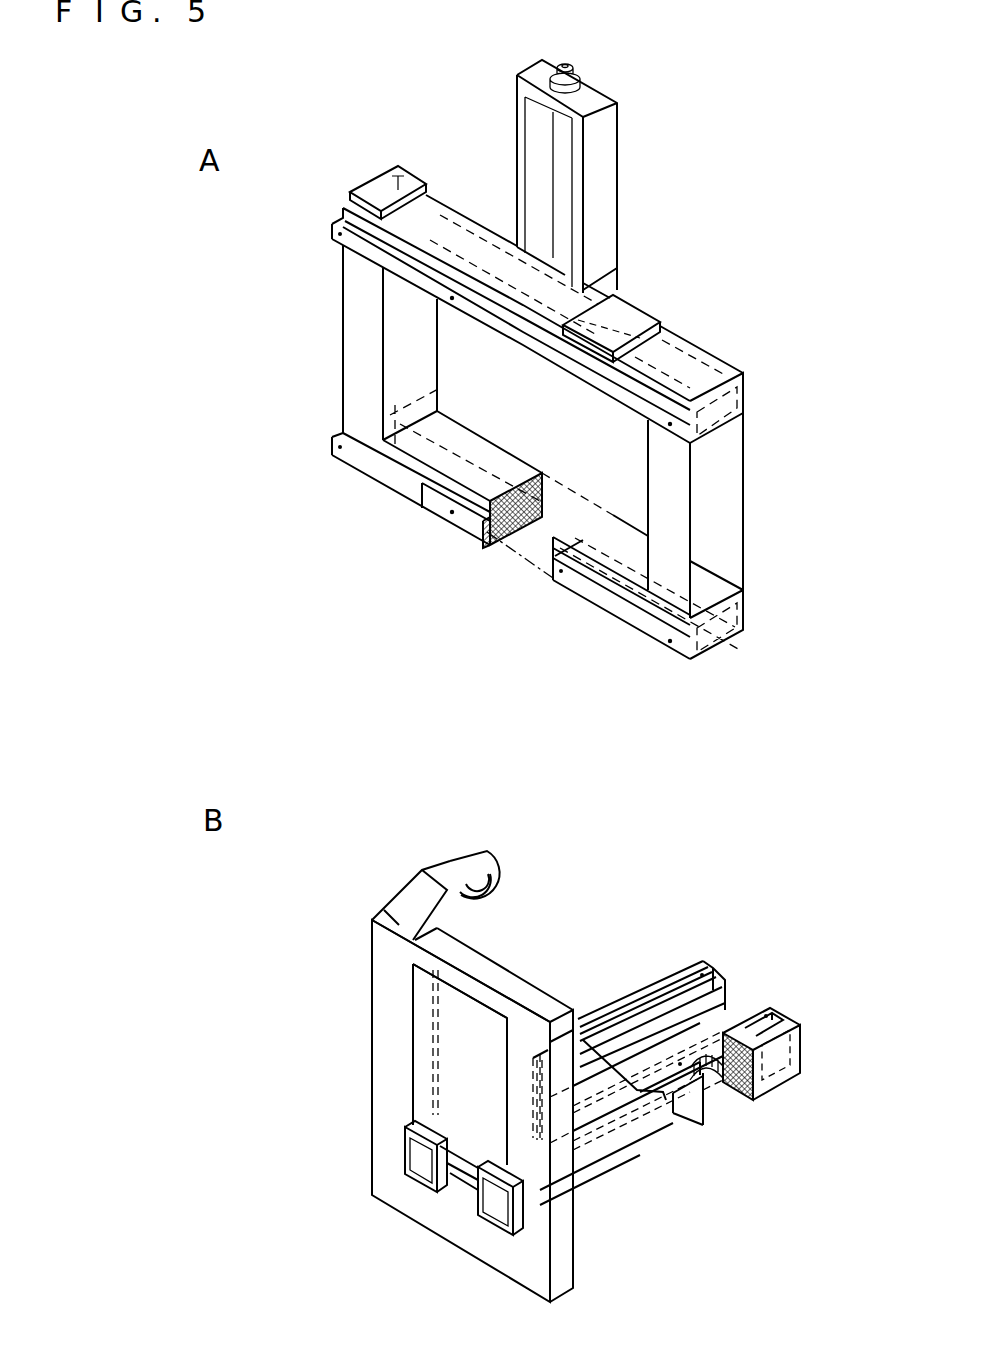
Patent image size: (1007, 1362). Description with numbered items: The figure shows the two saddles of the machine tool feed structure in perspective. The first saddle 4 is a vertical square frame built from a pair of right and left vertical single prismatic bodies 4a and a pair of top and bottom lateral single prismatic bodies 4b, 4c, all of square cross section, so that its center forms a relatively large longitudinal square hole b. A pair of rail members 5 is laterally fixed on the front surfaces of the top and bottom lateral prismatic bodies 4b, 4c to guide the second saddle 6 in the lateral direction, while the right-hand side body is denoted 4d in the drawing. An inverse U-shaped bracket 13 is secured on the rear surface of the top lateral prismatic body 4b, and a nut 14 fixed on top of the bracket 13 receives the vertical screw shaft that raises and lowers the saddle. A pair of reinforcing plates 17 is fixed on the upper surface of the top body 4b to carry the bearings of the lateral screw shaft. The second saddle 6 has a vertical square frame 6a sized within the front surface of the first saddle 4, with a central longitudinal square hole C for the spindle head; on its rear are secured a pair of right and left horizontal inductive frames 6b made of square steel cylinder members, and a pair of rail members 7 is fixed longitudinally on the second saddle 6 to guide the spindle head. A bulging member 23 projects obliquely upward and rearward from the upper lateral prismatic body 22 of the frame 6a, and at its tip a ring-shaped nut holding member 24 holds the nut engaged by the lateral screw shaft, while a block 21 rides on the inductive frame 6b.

In FIG. 5A, the first saddle 4 is at (760, 336).
In FIG. 5A, the vertical single prismatic body 4a is at (343, 325).
In FIG. 5A, the top lateral single prismatic body 4b is at (485, 232).
In FIG. 5A, the bottom lateral single prismatic body 4c is at (455, 475).
In FIG. 5A, the right post of frame 4d is at (745, 507).
In FIG. 5A, the rail member 5 is at (507, 326).
In FIG. 5B, the second saddle 6 is at (422, 1244).
In FIG. 5B, the vertical square frame 6a is at (372, 1102).
In FIG. 5B, the horizontal inductive frame 6b is at (670, 985).
In FIG. 5B, the rail member 7 is at (630, 1010).
In FIG. 5A, the bracket 13 is at (617, 200).
In FIG. 5A, the nut 14 is at (577, 73).
In FIG. 5A, the reinforcing plate 17 is at (396, 170).
In FIG. 5B, the carriage block 21 is at (745, 1012).
In FIG. 5B, the lateral prismatic body 22 is at (512, 988).
In FIG. 5B, the bulging member 23 is at (412, 899).
In FIG. 5B, the nut holding member 24 is at (463, 848).
In FIG. 5A, the square hole b is at (600, 485).
In FIG. 5B, the square hole C is at (450, 1068).